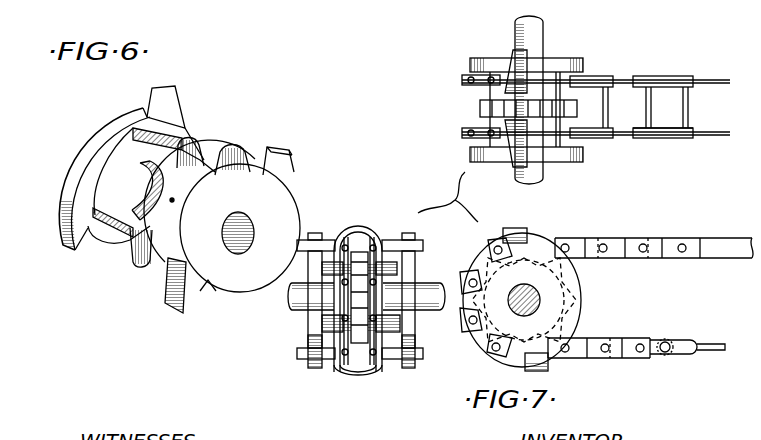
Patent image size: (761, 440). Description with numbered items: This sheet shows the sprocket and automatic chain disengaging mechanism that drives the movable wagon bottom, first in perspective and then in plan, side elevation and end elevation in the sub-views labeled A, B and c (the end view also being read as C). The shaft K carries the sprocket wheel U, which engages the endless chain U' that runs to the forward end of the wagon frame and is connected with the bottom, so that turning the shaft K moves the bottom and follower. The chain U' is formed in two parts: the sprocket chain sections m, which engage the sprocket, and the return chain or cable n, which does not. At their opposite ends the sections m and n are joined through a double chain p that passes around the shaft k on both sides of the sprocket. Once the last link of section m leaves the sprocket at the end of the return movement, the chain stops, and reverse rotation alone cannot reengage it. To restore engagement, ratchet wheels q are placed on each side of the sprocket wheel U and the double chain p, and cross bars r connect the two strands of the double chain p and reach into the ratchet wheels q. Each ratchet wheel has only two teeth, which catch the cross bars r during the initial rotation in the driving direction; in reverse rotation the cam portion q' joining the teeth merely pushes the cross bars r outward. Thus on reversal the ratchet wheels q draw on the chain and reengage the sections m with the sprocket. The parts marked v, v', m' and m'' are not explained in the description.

In FIG. 6, the ratchet wheels q is at (180, 168).
In FIG. 7, the ratchet wheels q is at (453, 201).
In FIG. 6, the cam portion q' is at (234, 188).
In FIG. 6, the shaft k is at (184, 132).
In FIG. 6, the tooth v is at (237, 148).
In FIG. 7, the tooth v is at (524, 300).
In FIG. 6, the shaft K is at (171, 210).
In FIG. 7, the shaft K is at (546, 30).
In FIG. 6, the sprocket wheel U is at (237, 148).
In FIG. 7, the sprocket wheel U is at (476, 314).
In FIG. 7, the cross bars r is at (515, 65).
In FIG. 7, the sprocket chain sections m is at (607, 154).
In FIG. 7, the double chain p is at (464, 83).
In FIG. 7, the gear v' is at (552, 109).
In FIG. 7, the chain link m' is at (663, 144).
In FIG. 7, the chain link m'' is at (663, 144).
In FIG. 7, the endless chain U' is at (614, 298).
In FIG. 7, the return chain n is at (673, 340).
In FIG. 7, the view A is at (471, 184).
In FIG. 7, the view B is at (474, 216).
In FIG. 7, the view C c is at (425, 213).
In FIG. 7, the view C is at (425, 213).